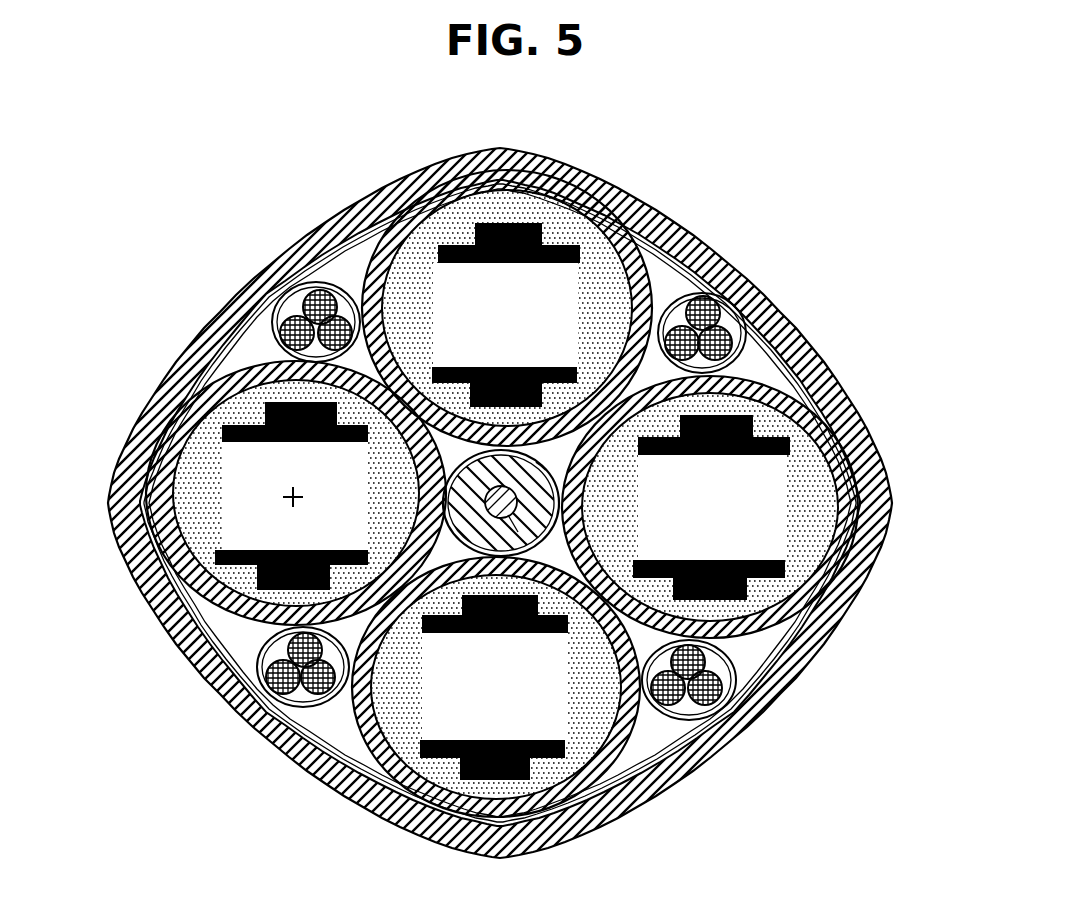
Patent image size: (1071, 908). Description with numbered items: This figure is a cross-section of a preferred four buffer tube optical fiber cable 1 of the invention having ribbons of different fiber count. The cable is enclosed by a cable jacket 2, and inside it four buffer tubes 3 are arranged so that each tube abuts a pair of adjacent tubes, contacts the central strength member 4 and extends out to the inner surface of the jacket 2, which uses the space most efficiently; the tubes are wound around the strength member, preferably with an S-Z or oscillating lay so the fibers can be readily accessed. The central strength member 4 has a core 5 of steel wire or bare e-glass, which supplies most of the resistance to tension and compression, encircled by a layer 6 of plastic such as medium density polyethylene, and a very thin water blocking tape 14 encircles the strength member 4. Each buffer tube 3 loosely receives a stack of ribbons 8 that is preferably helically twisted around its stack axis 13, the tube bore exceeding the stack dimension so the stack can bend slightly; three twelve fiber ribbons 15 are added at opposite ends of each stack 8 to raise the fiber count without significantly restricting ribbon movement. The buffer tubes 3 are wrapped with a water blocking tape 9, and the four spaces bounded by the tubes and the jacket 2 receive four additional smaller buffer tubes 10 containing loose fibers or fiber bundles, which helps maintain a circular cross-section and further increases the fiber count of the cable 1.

The cable 1 is at (770, 255).
The cable jacket 2 is at (880, 535).
The buffer tubes 3 is at (640, 250).
The central strength member 4 is at (464, 459).
The core 5 is at (538, 540).
The layer of plastic 6 is at (540, 465).
The stacks of ribbons 8 is at (420, 222).
The water blocking tape 9 is at (800, 663).
The smaller buffer tubes 10 is at (695, 295).
The stack axis 13 is at (290, 494).
The water blocking tape 14 is at (476, 533).
The twelve fiber ribbons 15 is at (505, 215).